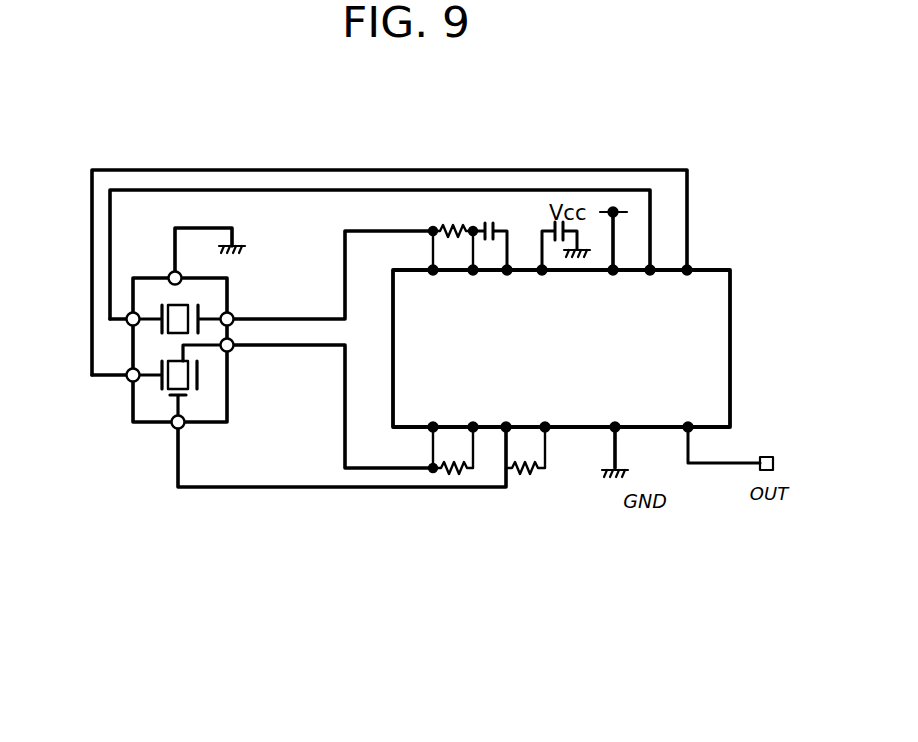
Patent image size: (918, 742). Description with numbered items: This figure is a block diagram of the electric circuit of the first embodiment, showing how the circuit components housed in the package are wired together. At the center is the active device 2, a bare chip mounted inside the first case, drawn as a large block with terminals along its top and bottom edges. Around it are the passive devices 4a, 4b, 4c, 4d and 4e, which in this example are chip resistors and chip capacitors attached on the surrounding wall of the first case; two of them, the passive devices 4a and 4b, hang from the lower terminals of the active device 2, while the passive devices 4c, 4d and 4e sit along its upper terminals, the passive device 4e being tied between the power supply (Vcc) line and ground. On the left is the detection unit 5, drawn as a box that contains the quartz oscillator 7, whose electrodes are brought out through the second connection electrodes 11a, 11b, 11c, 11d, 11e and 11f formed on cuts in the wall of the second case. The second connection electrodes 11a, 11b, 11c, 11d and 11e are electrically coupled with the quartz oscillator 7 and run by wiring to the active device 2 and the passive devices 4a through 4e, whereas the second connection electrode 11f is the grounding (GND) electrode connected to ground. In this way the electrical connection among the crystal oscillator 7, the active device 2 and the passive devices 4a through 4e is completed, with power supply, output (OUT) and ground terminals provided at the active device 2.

The active device 2 is at (710, 340).
The passive device 4a is at (448, 477).
The passive device 4b is at (528, 477).
The passive device 4c is at (448, 218).
The passive device 4d is at (490, 218).
The passive device 4e is at (550, 220).
The detection unit 5 is at (230, 427).
The quartz oscillator 7 is at (187, 303).
The second connection electrode 11a is at (129, 380).
The second connection electrode 11b is at (127, 323).
The second connection electrode 11c is at (232, 314).
The second connection electrode 11d is at (173, 429).
The second connection electrode 11e is at (233, 349).
The second connection electrode 11f is at (172, 272).